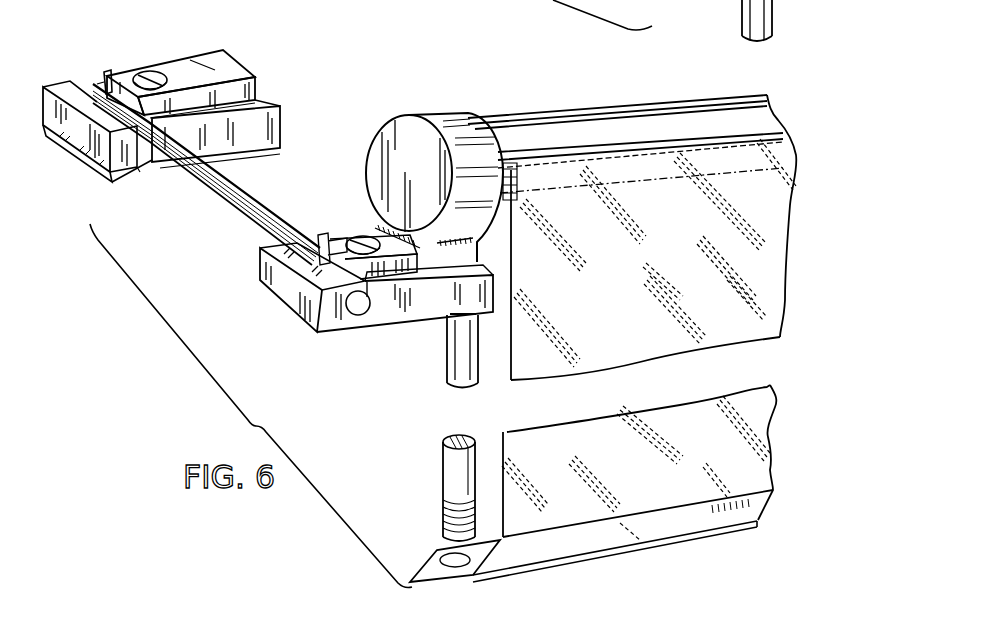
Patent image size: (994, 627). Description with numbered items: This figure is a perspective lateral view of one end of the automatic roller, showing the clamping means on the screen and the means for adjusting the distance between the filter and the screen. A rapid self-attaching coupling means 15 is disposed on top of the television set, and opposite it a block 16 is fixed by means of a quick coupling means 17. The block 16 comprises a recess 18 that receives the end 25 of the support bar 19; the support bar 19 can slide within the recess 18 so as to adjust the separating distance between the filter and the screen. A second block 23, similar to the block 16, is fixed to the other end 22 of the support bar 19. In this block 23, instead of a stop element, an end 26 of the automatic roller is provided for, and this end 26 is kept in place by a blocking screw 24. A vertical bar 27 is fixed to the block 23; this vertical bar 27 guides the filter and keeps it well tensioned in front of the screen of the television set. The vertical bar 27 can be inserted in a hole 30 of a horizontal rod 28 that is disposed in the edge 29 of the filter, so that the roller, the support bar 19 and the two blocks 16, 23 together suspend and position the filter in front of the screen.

The rapid self-attaching coupling means 15 is at (143, 177).
The block 16 is at (262, 124).
The quick coupling means 17 is at (83, 160).
The recess 18 is at (128, 90).
The support bar 19 is at (247, 211).
The other end of the support bar 22 is at (357, 308).
The block 23 is at (428, 305).
The blocking screw 24 is at (363, 240).
The end of the support bar 25 is at (90, 86).
The end of the automatic roller 26 is at (464, 148).
The vertical bar 27 is at (450, 470).
The horizontal rod 28 is at (707, 518).
The edge of the filter 29 is at (507, 543).
The hole 30 is at (450, 563).